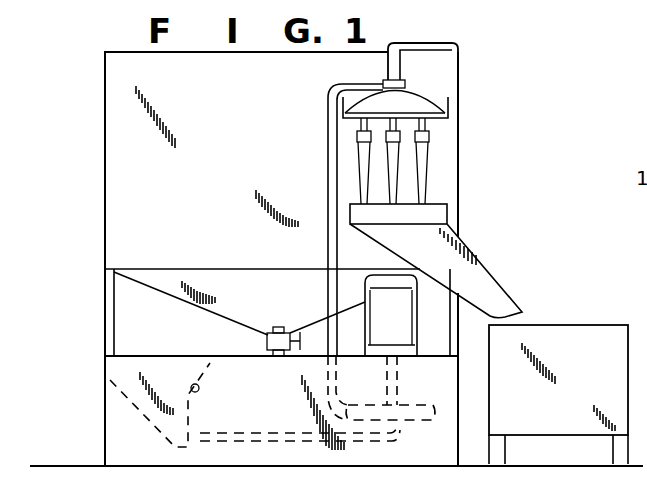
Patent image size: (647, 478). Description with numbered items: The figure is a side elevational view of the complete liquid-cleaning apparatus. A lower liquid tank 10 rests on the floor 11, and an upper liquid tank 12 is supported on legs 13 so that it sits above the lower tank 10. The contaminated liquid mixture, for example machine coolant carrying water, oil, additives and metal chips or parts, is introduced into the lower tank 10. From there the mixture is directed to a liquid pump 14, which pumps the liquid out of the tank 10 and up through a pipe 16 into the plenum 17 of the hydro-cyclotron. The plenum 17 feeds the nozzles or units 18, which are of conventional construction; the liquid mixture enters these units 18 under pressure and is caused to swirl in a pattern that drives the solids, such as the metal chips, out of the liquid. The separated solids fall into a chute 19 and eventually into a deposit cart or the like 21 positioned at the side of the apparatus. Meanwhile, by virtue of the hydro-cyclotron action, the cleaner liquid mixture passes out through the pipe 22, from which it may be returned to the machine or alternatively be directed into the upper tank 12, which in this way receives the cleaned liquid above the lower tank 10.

The lower liquid tank 10 is at (110, 393).
The floor 11 is at (52, 465).
The upper liquid tank 12 is at (112, 233).
The legs 13 is at (106, 310).
The liquid pump 14 is at (410, 410).
The pipe 16 is at (328, 228).
The plenum 17 is at (415, 100).
The nozzles or units 18 is at (423, 166).
The chute 19 is at (470, 268).
The deposit cart 21 is at (543, 330).
The pipe 22 is at (388, 62).